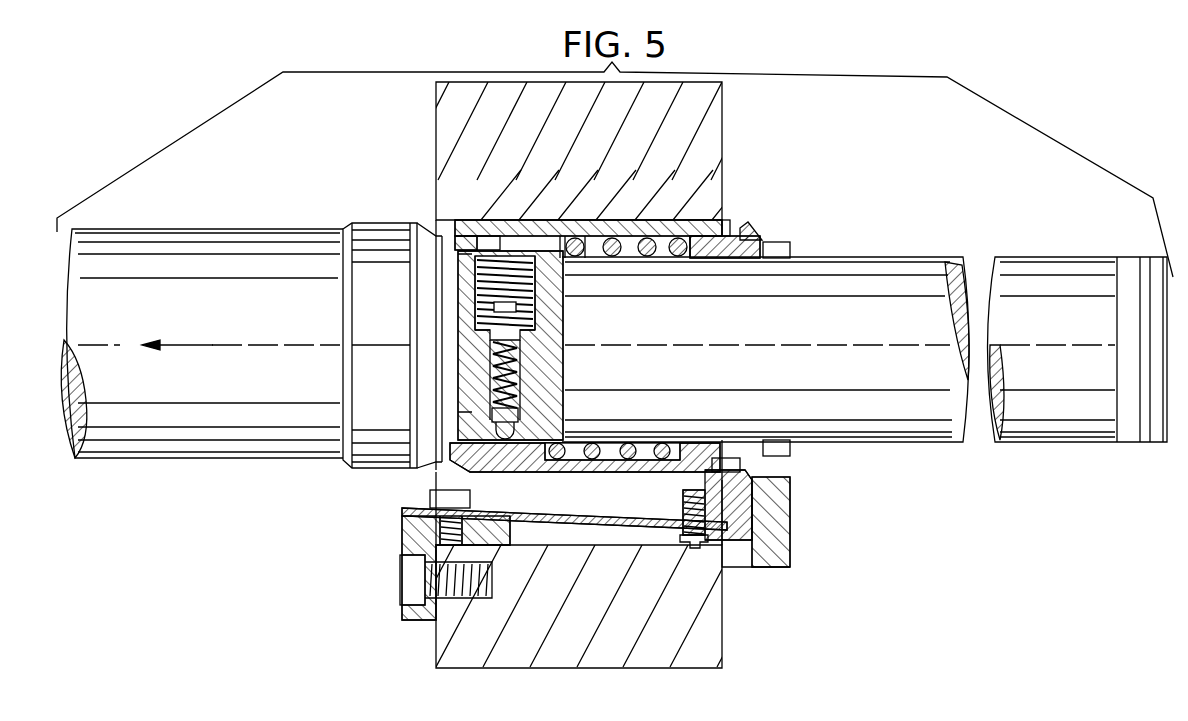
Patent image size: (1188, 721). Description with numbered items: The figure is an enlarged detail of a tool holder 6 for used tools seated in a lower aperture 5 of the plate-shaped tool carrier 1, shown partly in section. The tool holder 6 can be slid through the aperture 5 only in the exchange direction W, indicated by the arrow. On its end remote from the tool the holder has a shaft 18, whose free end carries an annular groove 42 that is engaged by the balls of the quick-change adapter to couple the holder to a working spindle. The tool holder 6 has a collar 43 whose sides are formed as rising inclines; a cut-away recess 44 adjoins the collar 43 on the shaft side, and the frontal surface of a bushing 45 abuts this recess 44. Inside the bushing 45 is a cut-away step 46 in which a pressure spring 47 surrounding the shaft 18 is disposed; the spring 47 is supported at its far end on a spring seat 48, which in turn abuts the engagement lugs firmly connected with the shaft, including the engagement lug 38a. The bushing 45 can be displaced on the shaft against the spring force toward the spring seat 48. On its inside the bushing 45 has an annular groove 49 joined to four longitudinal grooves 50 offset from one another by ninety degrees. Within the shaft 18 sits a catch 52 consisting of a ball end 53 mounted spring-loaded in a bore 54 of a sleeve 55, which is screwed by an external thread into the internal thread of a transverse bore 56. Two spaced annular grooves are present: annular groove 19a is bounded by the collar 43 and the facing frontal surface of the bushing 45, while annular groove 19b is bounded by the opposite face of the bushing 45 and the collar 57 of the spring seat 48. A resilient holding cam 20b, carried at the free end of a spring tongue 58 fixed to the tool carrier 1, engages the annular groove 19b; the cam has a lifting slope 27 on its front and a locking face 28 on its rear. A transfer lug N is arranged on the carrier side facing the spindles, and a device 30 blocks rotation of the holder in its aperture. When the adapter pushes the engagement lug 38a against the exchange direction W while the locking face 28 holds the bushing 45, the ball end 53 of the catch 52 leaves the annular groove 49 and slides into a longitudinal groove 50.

The tool carrier 1 is at (436, 104).
The lower aperture 5 is at (726, 228).
The tool holder 6 is at (215, 248).
The shaft 18 is at (888, 282).
The annular groove 19a is at (432, 462).
The annular groove 19b is at (748, 482).
The holding cam 20b is at (740, 505).
The lifting slope 27 is at (722, 440).
The locking face 28 is at (690, 485).
The device 30 is at (528, 462).
The engagement lug 38a is at (790, 250).
The annular groove 42 is at (1128, 265).
The collar 43 is at (375, 237).
The cut-away recess 44 is at (448, 246).
The bushing 45 is at (518, 236).
The cut-away step 46 is at (606, 240).
The pressure spring 47 is at (650, 252).
The spring seat 48 is at (722, 256).
The annular groove 49 is at (494, 250).
The longitudinal groove 50 is at (462, 262).
The catch 52 is at (552, 352).
The ball end 53 is at (530, 426).
The bore 54 is at (522, 372).
The sleeve 55 is at (478, 350).
The bore 56 is at (476, 292).
The collar 57 is at (752, 236).
The spring tongue 58 is at (603, 516).
The exchange direction W is at (198, 346).
The transfer lug N is at (785, 520).